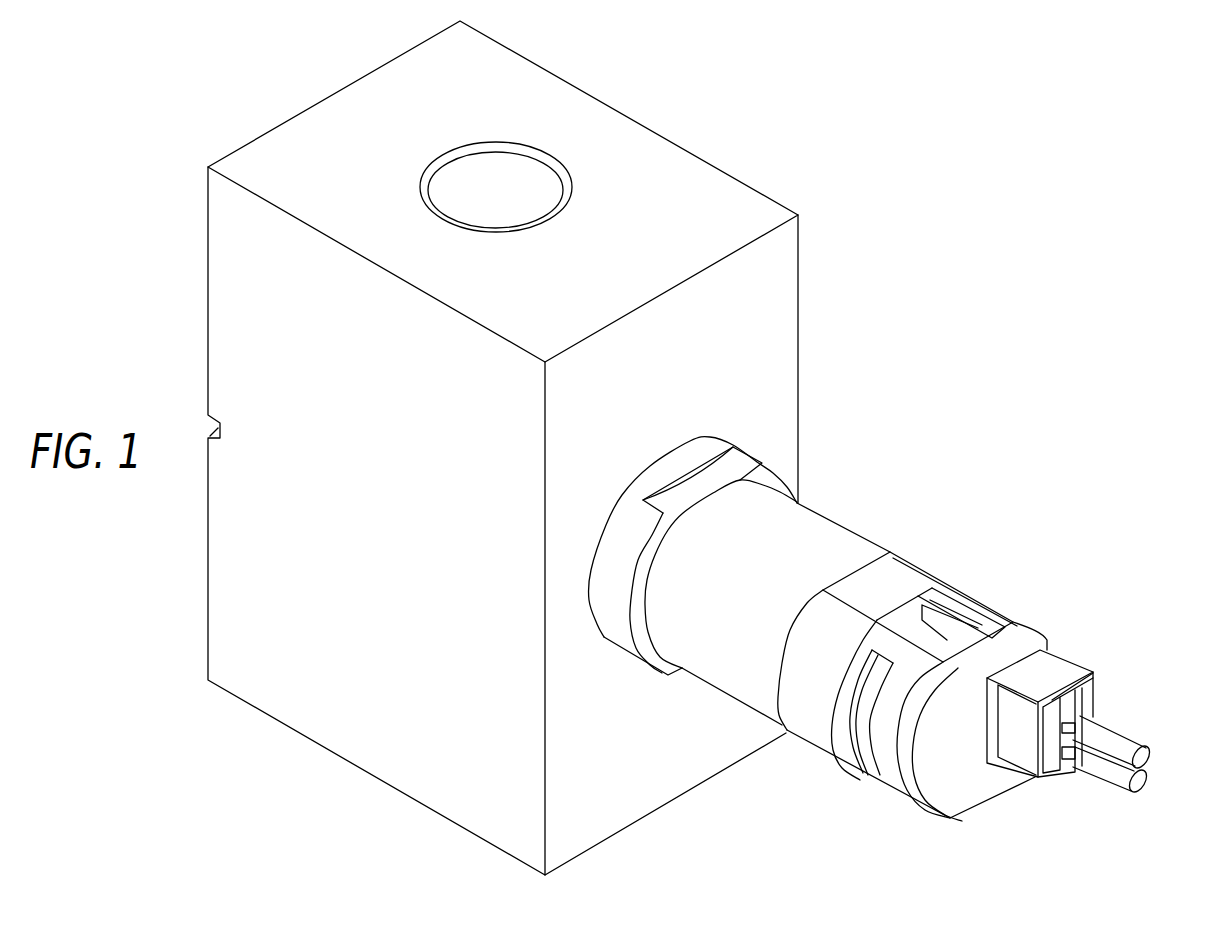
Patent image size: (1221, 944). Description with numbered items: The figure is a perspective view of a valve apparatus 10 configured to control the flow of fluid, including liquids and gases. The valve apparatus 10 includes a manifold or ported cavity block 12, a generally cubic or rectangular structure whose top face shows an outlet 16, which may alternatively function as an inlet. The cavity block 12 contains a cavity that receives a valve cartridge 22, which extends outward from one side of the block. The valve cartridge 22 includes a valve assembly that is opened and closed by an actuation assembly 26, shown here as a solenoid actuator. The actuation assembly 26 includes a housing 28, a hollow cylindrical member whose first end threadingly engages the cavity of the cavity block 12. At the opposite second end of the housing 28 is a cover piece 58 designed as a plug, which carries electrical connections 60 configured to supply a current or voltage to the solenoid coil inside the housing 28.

The valve apparatus 10 is at (1020, 260).
The cavity block 12 is at (305, 555).
The outlet 16 is at (540, 183).
The valve cartridge 22 is at (742, 702).
The actuation assembly 26 is at (840, 542).
The housing 28 is at (710, 614).
The cover piece 58 is at (958, 785).
The electrical connections 60 is at (1120, 737).